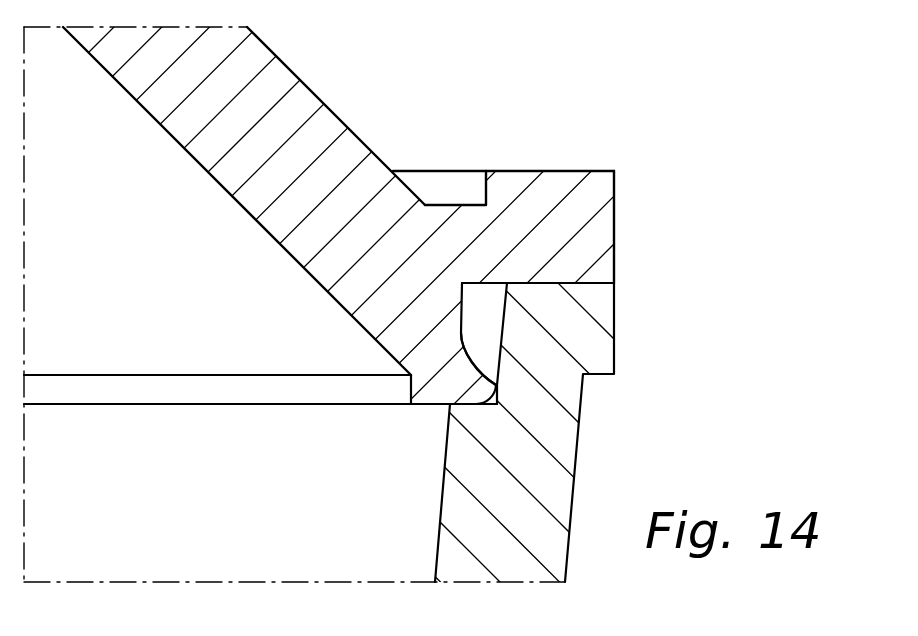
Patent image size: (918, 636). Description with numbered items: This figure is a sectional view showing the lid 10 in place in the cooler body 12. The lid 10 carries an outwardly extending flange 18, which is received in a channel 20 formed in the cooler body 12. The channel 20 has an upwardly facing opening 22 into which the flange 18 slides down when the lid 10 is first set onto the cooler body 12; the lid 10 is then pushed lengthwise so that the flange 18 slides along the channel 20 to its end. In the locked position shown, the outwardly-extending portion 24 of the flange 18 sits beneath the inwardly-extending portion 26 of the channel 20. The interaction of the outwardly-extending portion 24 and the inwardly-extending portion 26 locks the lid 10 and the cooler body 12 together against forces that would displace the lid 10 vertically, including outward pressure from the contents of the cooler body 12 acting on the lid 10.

The lid 10 is at (581, 438).
The cooler body 12 is at (318, 92).
The outwardly extending flange 18 is at (463, 334).
The channel 20 is at (470, 357).
The upwardly facing opening 22 is at (483, 297).
The outwardly-extending portion of flange 24 is at (496, 388).
The inwardly-extending portion of channel 26 is at (458, 407).